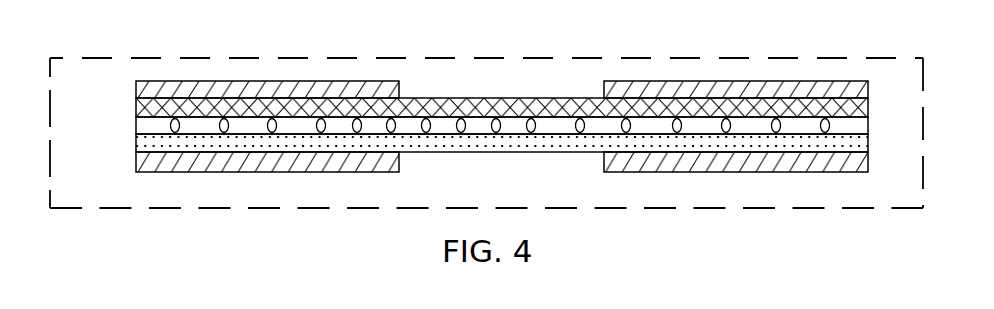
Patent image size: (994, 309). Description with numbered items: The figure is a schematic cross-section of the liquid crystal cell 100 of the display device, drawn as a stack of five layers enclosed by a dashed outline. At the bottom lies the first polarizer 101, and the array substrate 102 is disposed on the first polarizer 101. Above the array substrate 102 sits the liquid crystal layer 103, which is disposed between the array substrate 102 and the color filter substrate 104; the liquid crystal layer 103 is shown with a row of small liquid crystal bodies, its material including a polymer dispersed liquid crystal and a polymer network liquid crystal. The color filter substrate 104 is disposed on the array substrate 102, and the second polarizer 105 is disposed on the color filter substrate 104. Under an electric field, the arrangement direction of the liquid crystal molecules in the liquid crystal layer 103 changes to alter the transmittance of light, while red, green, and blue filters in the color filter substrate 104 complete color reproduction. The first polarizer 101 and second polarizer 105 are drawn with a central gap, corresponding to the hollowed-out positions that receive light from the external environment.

The liquid crystal cell 100 is at (483, 57).
The first polarizer 101 is at (136, 163).
The array substrate 102 is at (136, 144).
The liquid crystal layer 103 is at (136, 126).
The color filter substrate 104 is at (136, 108).
The second polarizer 105 is at (136, 90).